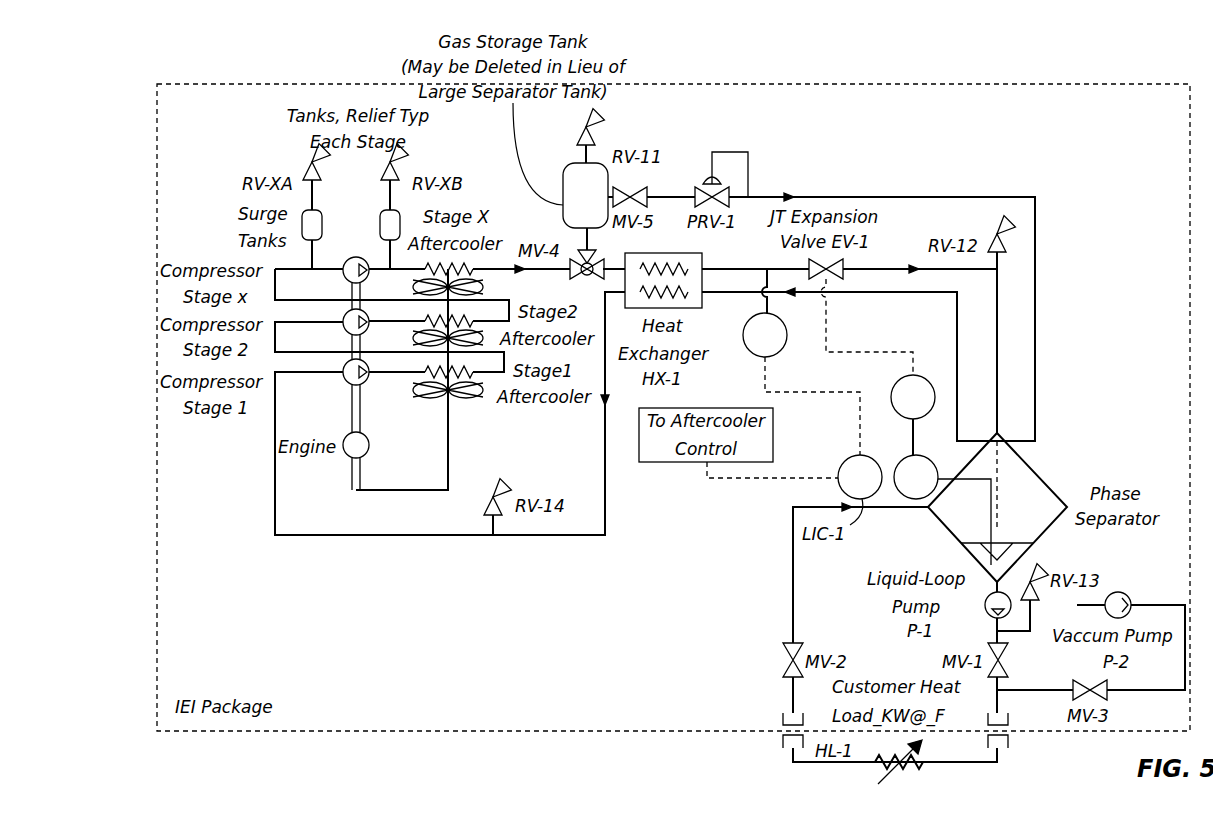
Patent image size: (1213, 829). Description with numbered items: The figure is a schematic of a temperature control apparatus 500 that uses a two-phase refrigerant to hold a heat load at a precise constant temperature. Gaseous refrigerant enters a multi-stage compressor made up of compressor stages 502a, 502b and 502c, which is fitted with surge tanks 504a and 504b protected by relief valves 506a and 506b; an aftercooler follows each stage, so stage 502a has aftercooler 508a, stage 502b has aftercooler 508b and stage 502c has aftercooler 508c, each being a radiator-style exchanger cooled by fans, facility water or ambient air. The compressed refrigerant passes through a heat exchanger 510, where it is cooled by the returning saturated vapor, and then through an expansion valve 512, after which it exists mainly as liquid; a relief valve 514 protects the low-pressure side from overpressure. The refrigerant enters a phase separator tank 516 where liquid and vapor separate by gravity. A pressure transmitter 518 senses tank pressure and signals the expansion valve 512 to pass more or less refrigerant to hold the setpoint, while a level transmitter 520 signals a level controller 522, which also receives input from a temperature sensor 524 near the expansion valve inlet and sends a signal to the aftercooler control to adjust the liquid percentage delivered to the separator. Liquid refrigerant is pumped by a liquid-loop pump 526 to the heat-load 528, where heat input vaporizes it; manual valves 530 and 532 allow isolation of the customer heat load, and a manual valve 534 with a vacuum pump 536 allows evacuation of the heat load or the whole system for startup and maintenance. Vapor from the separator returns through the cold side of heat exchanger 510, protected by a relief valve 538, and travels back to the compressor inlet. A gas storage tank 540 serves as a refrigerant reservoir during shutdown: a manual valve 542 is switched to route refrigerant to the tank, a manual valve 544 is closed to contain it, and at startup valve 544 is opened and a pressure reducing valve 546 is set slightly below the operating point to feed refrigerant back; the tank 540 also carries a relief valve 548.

The temperature control apparatus 500 is at (1122, 66).
The compressor stage 502a is at (342, 384).
The compressor stage 502b is at (342, 331).
The compressor stage 502c is at (342, 280).
The surge tank 504a is at (314, 209).
The surge tank 504b is at (381, 233).
The relief valve 506a is at (303, 163).
The relief valve 506b is at (412, 159).
The aftercooler 508a is at (477, 400).
The aftercooler 508b is at (433, 364).
The aftercooler 508c is at (484, 291).
The heat exchanger 510 is at (693, 309).
The expansion valve 512 is at (838, 277).
The relief valve 514 is at (1012, 233).
The phase separator tank 516 is at (1034, 470).
The pressure transmitter 518 is at (893, 397).
The level transmitter 520 is at (896, 450).
The level controller 522 is at (838, 482).
The temperature sensor 524 is at (757, 358).
The liquid-loop pump 526 is at (990, 590).
The heat-load 528 is at (793, 755).
The manual valve 530 is at (1008, 670).
The manual valve 532 is at (788, 668).
The manual valve 534 is at (1106, 700).
The vacuum pump 536 is at (1122, 592).
The relief valve 538 is at (504, 491).
The gas storage tank 540 is at (577, 163).
The manual valve 542 is at (581, 250).
The manual valve 544 is at (646, 189).
The pressure reducing valve 546 is at (713, 152).
The relief valve 548 is at (600, 130).